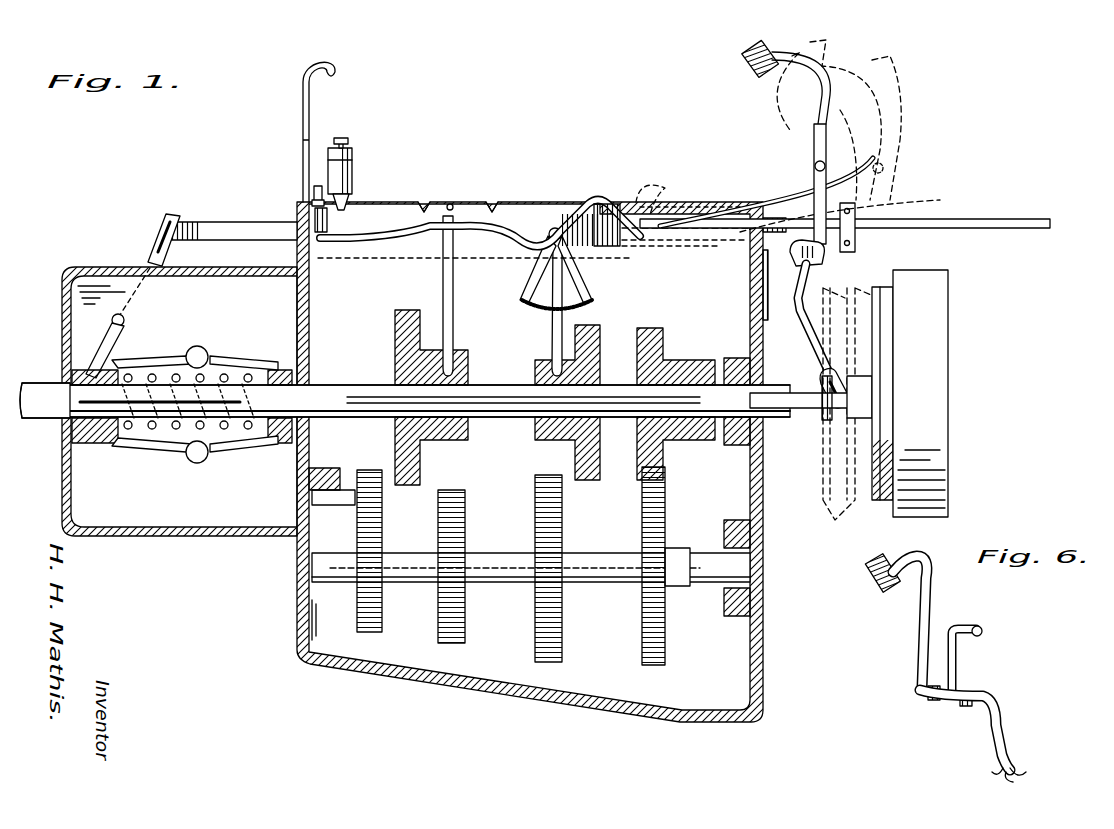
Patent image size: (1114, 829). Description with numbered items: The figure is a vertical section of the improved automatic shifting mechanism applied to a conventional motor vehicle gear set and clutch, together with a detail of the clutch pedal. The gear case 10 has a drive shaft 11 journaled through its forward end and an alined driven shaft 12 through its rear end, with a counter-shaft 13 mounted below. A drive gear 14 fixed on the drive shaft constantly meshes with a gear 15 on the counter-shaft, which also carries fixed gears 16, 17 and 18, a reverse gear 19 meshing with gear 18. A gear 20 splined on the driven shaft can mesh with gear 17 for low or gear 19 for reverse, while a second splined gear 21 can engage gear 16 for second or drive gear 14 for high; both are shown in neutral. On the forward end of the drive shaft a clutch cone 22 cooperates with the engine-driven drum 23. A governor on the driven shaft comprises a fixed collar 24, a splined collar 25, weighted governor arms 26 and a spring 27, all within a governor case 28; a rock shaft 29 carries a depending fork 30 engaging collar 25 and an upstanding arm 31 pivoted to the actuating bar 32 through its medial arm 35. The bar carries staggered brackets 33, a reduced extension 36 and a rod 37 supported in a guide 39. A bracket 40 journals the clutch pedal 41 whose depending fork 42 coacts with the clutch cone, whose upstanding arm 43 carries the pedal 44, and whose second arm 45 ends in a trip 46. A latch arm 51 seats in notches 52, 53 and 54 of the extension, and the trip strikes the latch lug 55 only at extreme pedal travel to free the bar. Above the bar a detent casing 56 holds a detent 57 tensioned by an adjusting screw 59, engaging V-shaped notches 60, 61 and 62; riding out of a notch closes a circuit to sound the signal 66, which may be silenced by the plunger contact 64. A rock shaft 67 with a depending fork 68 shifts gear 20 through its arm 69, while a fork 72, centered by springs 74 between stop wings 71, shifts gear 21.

In FIG. 1, the gear case 10 is at (764, 490).
In FIG. 1, the drive shaft 11 is at (778, 418).
In FIG. 1, the driven shaft 12 is at (30, 418).
In FIG. 1, the counter-shaft 13 is at (604, 583).
In FIG. 1, the drive gear 14 is at (665, 350).
In FIG. 1, the gear 15 is at (664, 666).
In FIG. 1, the gear 16 is at (562, 660).
In FIG. 1, the gear 17 is at (466, 640).
In FIG. 1, the gear 18 is at (383, 630).
In FIG. 1, the reverse gear 19 is at (358, 476).
In FIG. 1, the gear 20 is at (395, 330).
In FIG. 1, the gear 21 is at (592, 326).
In FIG. 1, the clutch cone 22 is at (875, 500).
In FIG. 1, the drum 23 is at (920, 393).
In FIG. 1, the collar 24 is at (286, 444).
In FIG. 1, the second collar 25 is at (102, 443).
In FIG. 1, the weighted governor arms 26 is at (232, 454).
In FIG. 1, the spring 27 is at (160, 428).
In FIG. 1, the governor case 28 is at (152, 537).
In FIG. 1, the rock shaft 29 is at (125, 318).
In FIG. 1, the depending fork 30 is at (112, 342).
In FIG. 1, the upstanding arm 31 is at (148, 262).
In FIG. 1, the actuating bar 32 is at (575, 200).
In FIG. 1, the brackets 33 is at (608, 202).
In FIG. 1, the arm 35 is at (245, 225).
In FIG. 1, the reduced extension 36 is at (742, 232).
In FIG. 1, the rod 37 is at (990, 219).
In FIG. 1, the guide 39 is at (857, 238).
In FIG. 1, the bracket 40 is at (764, 272).
In FIG. 1, the clutch pedal 41 is at (770, 190).
In FIG. 6, the clutch pedal 41 is at (970, 698).
In FIG. 1, the depending fork 42 is at (810, 335).
In FIG. 6, the depending fork 42 is at (1002, 722).
In FIG. 1, the upstanding arm 43 is at (818, 100).
In FIG. 6, the upstanding arm 43 is at (924, 612).
In FIG. 1, the pedal 44 is at (748, 64).
In FIG. 6, the pedal 44 is at (876, 588).
In FIG. 1, the second arm 45 is at (813, 173).
In FIG. 6, the second arm 45 is at (956, 676).
In FIG. 1, the trip 46 is at (814, 164).
In FIG. 6, the trip 46 is at (982, 630).
In FIG. 1, the arm 51 is at (644, 238).
In FIG. 1, the notch 52 is at (640, 200).
In FIG. 1, the notch 53 is at (692, 202).
In FIG. 1, the notch 54 is at (780, 214).
In FIG. 1, the lug 55 is at (874, 156).
In FIG. 1, the detent casing 56 is at (352, 160).
In FIG. 1, the detent 57 is at (350, 196).
In FIG. 1, the adjusting screw 59 is at (345, 138).
In FIG. 1, the V-shaped notch 60 is at (330, 210).
In FIG. 1, the V-shaped notch 61 is at (424, 200).
In FIG. 1, the V-shaped notch 62 is at (492, 200).
In FIG. 1, the plunger contact 64 is at (314, 190).
In FIG. 1, the signal 66 is at (302, 118).
In FIG. 1, the rock shaft 67 is at (455, 226).
In FIG. 1, the depending fork 68 is at (442, 296).
In FIG. 1, the arm 69 is at (428, 240).
In FIG. 1, the stop wings 71 is at (528, 282).
In FIG. 1, the depending fork 72 is at (552, 327).
In FIG. 1, the springs 74 is at (530, 303).